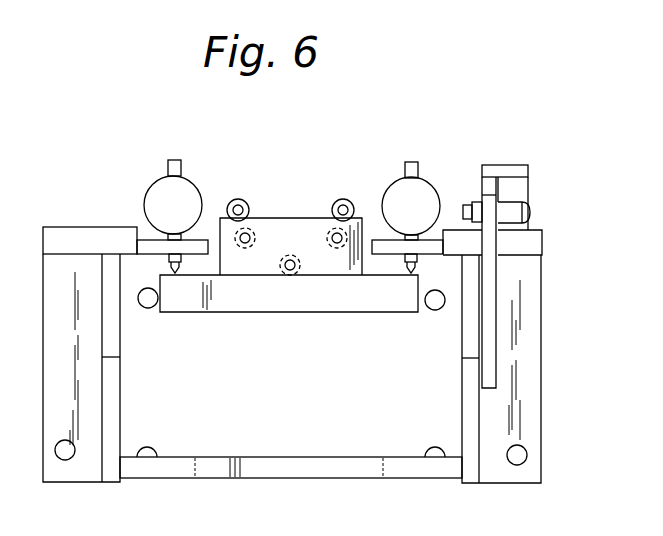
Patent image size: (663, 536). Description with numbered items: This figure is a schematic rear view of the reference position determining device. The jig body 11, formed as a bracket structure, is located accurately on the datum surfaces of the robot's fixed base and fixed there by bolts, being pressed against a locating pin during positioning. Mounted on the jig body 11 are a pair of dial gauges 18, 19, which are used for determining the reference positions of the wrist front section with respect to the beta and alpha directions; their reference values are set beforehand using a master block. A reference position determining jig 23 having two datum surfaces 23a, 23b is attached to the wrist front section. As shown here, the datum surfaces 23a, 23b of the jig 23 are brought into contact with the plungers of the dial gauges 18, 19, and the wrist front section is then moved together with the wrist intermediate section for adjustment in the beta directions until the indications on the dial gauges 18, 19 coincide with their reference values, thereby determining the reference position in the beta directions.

The jig body 11 is at (410, 466).
The dial gauge 18 is at (163, 196).
The dial gauge 19 is at (425, 195).
The reference position determining jig 23 is at (290, 233).
The datum surface 23a is at (160, 274).
The datum surface 23b is at (418, 274).